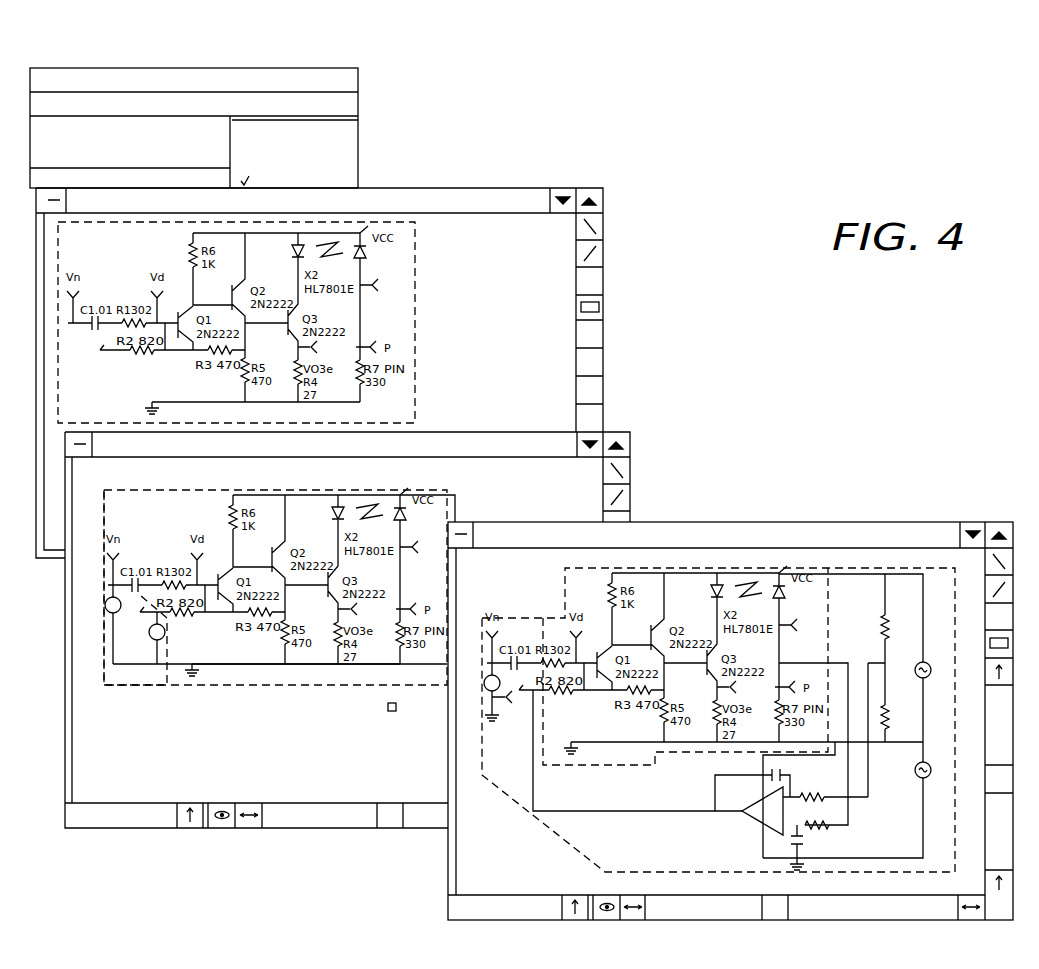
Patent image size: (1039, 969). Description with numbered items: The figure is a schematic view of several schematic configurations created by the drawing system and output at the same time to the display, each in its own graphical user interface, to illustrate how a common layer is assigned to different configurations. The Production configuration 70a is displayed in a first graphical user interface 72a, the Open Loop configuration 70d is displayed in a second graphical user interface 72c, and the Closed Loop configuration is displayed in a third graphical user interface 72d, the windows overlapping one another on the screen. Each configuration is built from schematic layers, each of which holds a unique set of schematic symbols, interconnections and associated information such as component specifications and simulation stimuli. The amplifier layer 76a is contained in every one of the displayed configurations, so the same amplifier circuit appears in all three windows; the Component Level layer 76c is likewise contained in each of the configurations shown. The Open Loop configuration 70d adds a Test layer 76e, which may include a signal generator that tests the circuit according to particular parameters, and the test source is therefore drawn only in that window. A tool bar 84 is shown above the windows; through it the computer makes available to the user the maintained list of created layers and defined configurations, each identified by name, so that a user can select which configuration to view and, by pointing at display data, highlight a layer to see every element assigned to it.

The tool bar 84 is at (387, 143).
The graphical user interface 72a is at (610, 197).
The Production configuration 70a is at (447, 267).
The layer 76a is at (418, 318).
The graphical user interface 72d is at (632, 440).
The Test layer 76e is at (137, 688).
The Open Loop configuration 70d is at (200, 740).
The graphical user interface 72c is at (928, 518).
The Component Level layer 76c is at (507, 795).